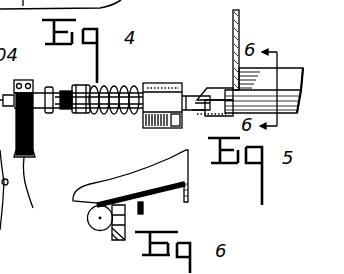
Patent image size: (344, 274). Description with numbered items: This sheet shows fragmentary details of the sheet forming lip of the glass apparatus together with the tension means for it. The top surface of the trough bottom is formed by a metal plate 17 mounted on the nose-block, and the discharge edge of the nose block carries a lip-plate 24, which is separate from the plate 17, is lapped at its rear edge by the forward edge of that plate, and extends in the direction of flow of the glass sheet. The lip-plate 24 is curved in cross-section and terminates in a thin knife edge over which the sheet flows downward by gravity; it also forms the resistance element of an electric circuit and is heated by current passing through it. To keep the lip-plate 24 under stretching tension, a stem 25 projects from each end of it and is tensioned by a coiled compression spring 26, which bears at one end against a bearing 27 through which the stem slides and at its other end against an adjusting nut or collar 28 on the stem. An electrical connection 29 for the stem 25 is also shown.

In FIG. 5, the metal plate 17 is at (292, 72).
In FIG. 6, the metal plate 17 is at (158, 194).
In FIG. 5, the lip-plate 24 is at (299, 102).
In FIG. 6, the lip-plate 24 is at (87, 218).
In FIG. 4, the stem 25 is at (184, 95).
In FIG. 4, the coiled compression spring 26 is at (121, 115).
In FIG. 4, the bearing 27 is at (159, 83).
In FIG. 6, the bearing 27 is at (110, 230).
In FIG. 4, the adjusting nut or collar 28 is at (75, 114).
In FIG. 4, the electrical connection 29 is at (28, 175).